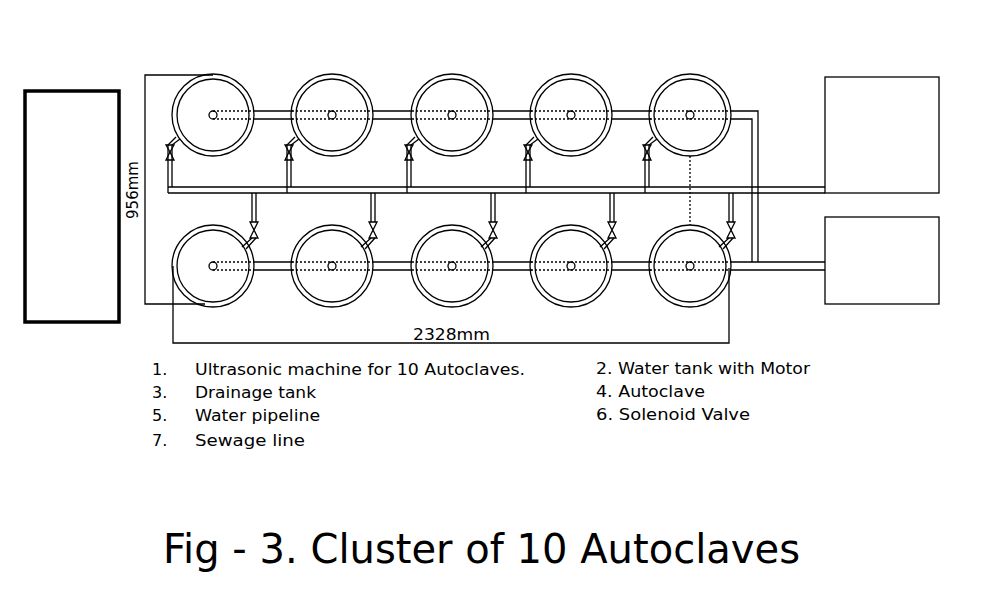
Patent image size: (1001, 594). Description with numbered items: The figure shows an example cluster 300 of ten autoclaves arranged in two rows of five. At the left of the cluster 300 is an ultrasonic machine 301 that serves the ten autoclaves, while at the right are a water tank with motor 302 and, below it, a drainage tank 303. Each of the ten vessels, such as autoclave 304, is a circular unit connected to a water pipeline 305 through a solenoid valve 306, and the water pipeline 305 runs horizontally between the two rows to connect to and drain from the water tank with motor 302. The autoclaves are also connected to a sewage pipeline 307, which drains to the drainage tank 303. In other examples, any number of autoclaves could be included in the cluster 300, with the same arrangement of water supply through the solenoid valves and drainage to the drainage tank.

The cluster 300 is at (495, 171).
The ultrasonic machine 301 is at (106, 328).
The water tank with motor 302 is at (883, 65).
The drainage tank 303 is at (885, 316).
The autoclave 304 is at (240, 83).
The water pipeline 305 is at (563, 187).
The solenoid valve 306 is at (413, 157).
The sewage pipeline 307 is at (762, 163).